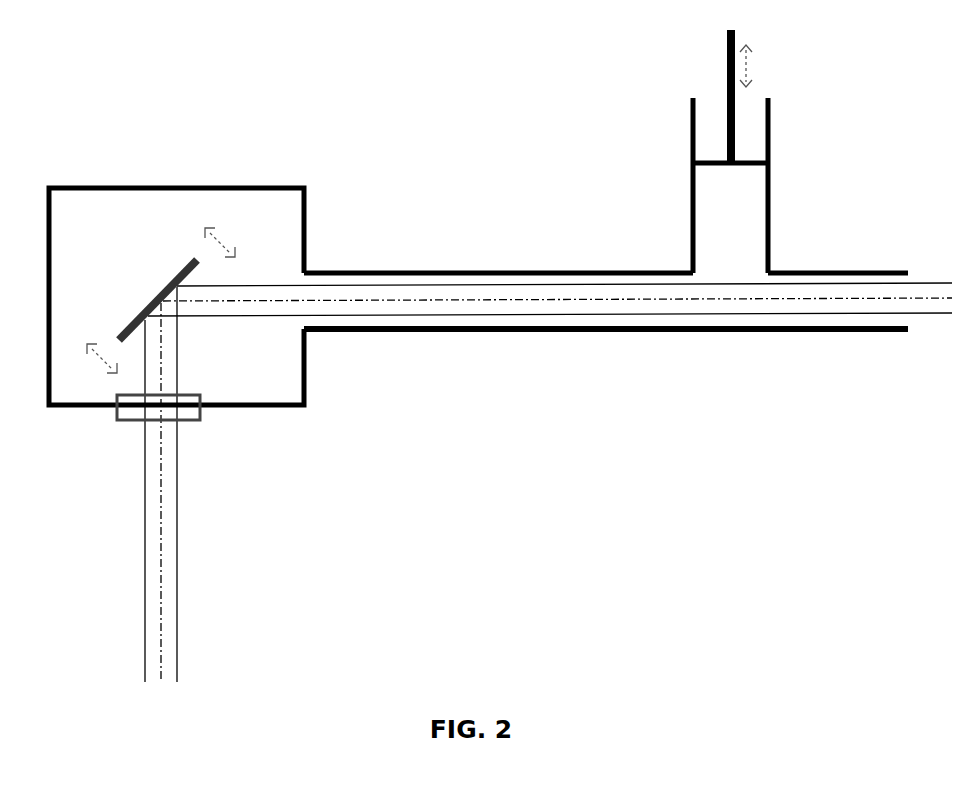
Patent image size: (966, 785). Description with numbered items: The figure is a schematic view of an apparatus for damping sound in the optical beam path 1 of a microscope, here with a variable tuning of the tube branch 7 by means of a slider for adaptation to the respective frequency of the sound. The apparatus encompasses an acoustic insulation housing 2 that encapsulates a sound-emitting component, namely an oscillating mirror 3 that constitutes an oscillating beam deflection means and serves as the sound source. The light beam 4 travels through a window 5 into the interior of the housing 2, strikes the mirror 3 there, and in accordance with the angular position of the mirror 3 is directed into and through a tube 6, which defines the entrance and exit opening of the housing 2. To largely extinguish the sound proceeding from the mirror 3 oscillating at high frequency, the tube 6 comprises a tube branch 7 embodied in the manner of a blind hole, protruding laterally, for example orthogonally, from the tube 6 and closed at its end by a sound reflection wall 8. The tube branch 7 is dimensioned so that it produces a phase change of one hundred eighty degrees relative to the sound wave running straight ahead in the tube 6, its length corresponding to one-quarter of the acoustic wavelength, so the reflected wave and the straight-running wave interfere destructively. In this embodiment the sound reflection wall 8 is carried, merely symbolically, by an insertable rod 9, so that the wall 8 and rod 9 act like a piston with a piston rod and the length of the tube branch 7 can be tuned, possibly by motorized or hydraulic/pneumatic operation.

The optical beam path 1 is at (170, 550).
The acoustic insulation housing 2 is at (180, 188).
The oscillating mirror 3 is at (138, 280).
The light beam 4 is at (933, 283).
The window 5 is at (183, 422).
The tube 6 is at (470, 273).
The tube branch 7 is at (690, 227).
The sound reflection wall 8 is at (744, 167).
The insertable rod 9 is at (728, 77).